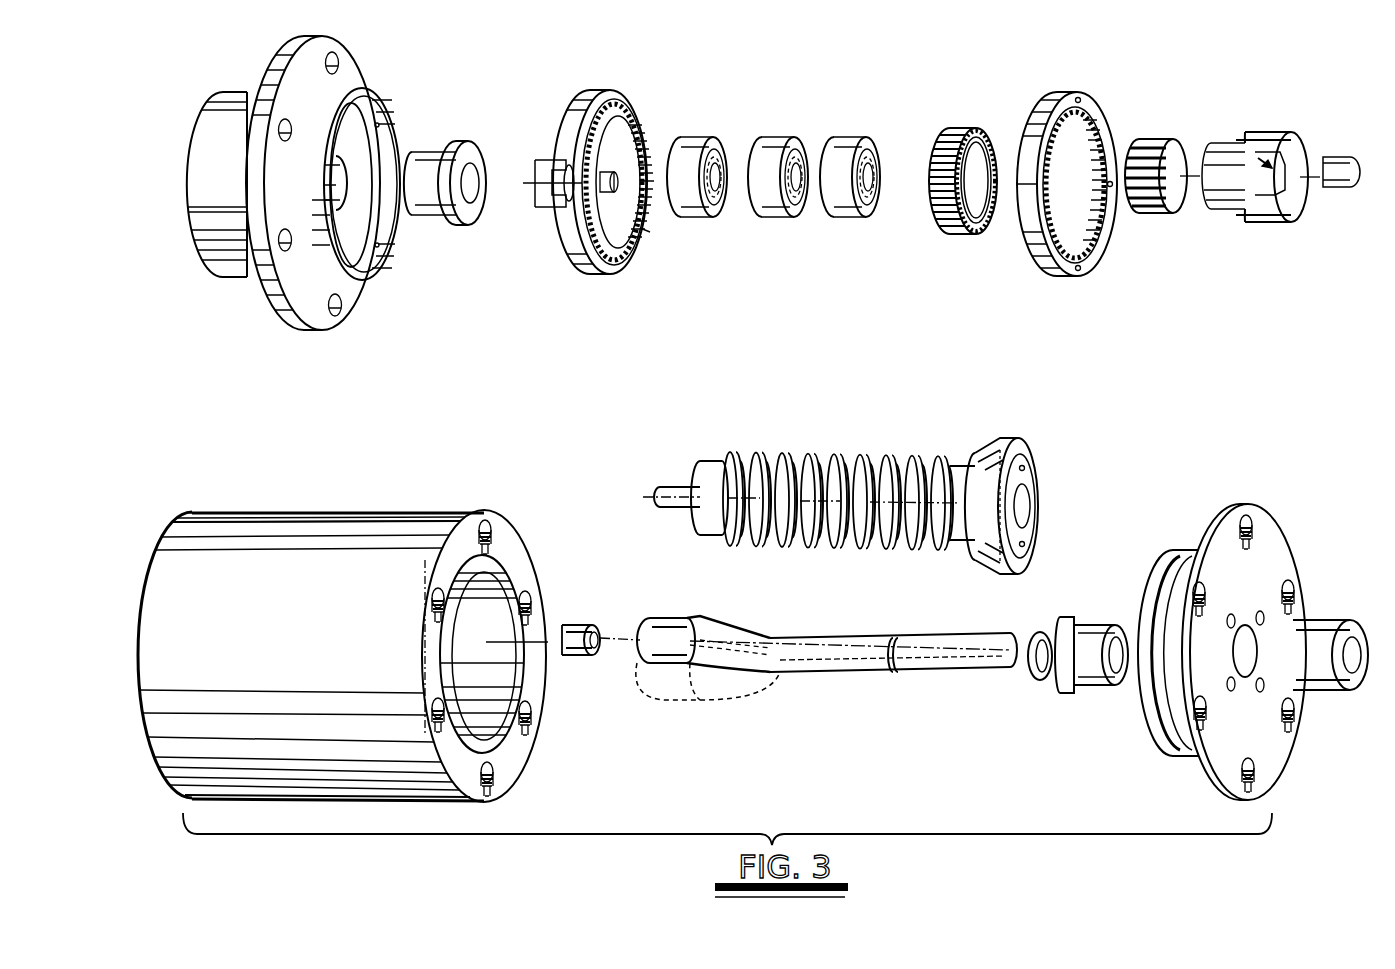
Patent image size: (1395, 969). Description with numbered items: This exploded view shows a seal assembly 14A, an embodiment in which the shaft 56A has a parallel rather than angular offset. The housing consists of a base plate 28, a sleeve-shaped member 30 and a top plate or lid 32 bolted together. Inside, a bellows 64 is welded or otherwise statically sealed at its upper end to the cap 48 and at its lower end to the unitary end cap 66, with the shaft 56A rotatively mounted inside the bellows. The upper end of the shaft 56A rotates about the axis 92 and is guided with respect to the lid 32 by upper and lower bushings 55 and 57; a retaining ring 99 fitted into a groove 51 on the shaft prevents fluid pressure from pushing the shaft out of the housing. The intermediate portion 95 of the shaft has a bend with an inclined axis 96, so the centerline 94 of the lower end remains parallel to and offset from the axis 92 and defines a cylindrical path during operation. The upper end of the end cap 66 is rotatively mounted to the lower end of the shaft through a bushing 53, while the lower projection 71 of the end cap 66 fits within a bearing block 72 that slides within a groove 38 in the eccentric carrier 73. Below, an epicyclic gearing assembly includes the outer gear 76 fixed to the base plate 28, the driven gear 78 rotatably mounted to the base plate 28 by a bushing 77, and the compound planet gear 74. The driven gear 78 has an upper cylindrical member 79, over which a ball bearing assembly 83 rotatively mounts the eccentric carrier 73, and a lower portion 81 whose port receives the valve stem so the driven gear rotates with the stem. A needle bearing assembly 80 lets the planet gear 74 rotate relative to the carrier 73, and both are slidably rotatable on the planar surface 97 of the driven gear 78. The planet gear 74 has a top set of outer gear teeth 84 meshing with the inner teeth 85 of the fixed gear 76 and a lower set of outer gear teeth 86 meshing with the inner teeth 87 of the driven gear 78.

The seal assembly 14A is at (619, 710).
The base plate 28 is at (310, 298).
The sleeve-shaped member 30 is at (345, 512).
The top plate 32 is at (1275, 748).
The groove 38 is at (1253, 160).
The cap 48 is at (992, 452).
The groove 51 is at (808, 659).
The bushing 53 is at (586, 622).
The upper bushing 55 is at (1318, 640).
The shaft 56A is at (820, 640).
The lower bushing 57 is at (1088, 670).
The bellows 64 is at (812, 458).
The end cap 66 is at (690, 468).
The lower projection 71 is at (660, 487).
The bearing block 72 is at (1338, 182).
The eccentric carrier 73 is at (1261, 186).
The compound planet gear 74 is at (971, 223).
The outer gear 76 is at (1073, 216).
The bushing 77 is at (440, 150).
The driven gear 78 is at (622, 183).
The upper cylindrical member 79 is at (628, 128).
The roller cage 80 is at (1157, 205).
The lower portion 81 is at (553, 167).
The ball bearing assembly 83 is at (893, 218).
The top set of outer gear teeth 84 is at (957, 230).
The inner teeth 85 is at (1095, 232).
The lower set of outer gear teeth 86 is at (937, 222).
The inner teeth 87 is at (622, 255).
The axis 92 is at (937, 655).
The centerline 94 is at (648, 632).
The intermediate portion 95 is at (740, 672).
The inclined axis 96 is at (722, 645).
The planar surface 97 is at (642, 232).
The retaining ring 99 is at (1038, 680).